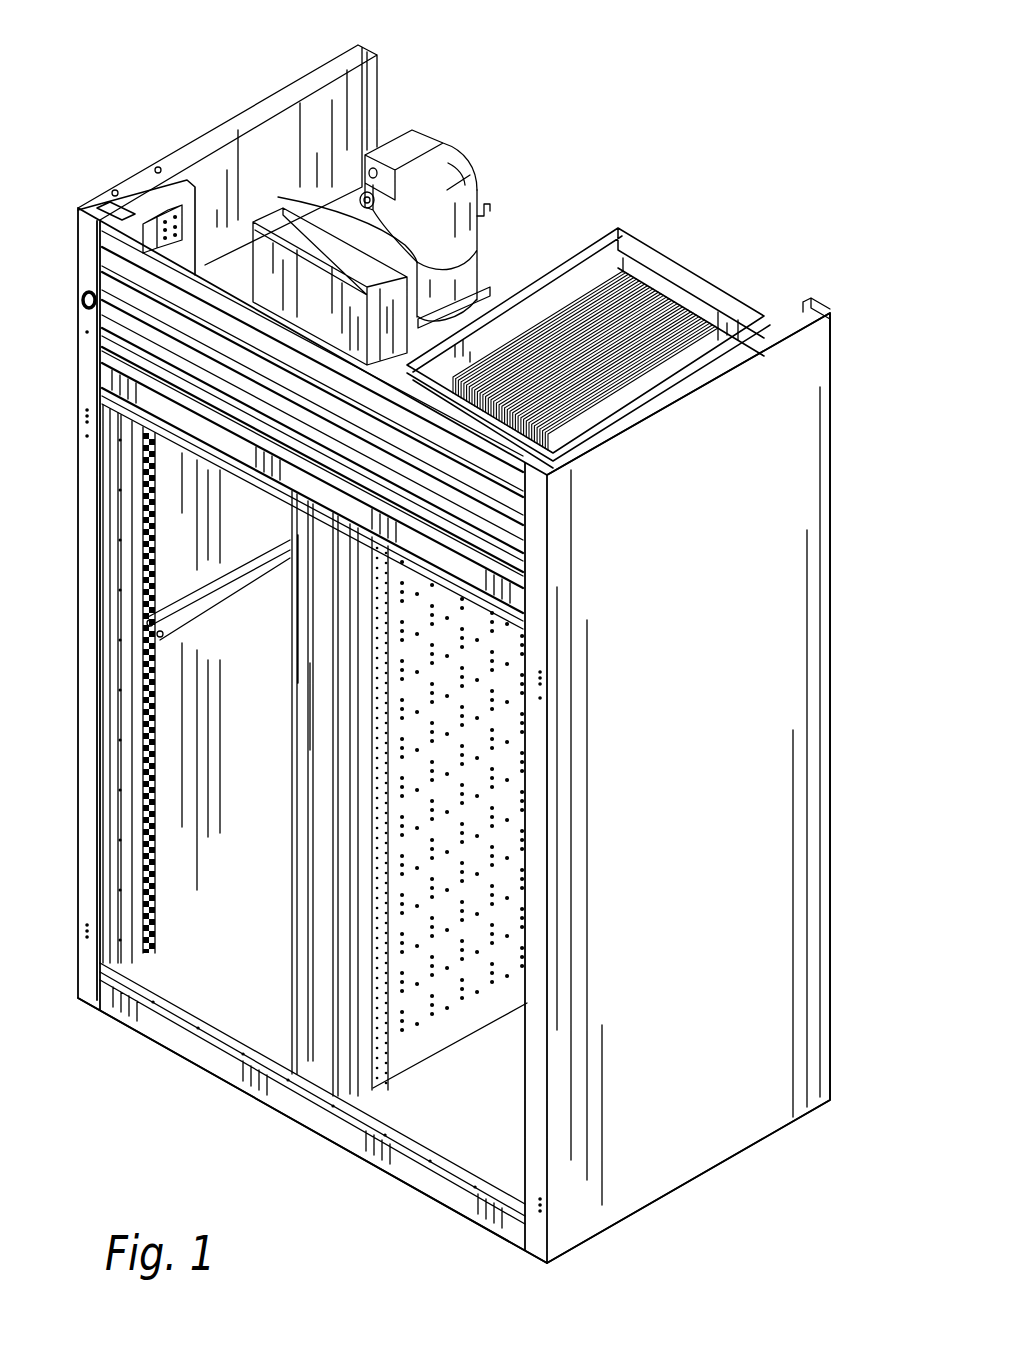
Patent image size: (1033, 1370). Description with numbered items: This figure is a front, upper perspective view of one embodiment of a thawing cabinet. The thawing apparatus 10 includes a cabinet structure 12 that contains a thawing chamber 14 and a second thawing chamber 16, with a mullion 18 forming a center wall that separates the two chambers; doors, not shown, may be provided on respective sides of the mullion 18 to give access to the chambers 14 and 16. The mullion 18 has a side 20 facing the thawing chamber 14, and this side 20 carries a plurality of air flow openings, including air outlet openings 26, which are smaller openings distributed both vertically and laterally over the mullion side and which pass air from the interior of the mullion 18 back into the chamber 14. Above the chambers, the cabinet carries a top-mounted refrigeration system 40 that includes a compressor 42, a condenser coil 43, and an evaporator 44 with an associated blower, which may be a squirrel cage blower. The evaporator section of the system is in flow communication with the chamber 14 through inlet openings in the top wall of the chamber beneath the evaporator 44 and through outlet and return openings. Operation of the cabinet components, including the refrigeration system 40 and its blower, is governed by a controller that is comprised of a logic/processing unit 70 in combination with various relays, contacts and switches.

The thawing apparatus 10 is at (699, 83).
The cabinet structure 12 is at (683, 1034).
The thawing chamber 14 is at (486, 1062).
The thawing chamber 16 is at (263, 802).
The mullion 18 is at (297, 960).
The side 20 is at (423, 1047).
The air outlet openings 26 is at (497, 826).
The refrigeration system 40 is at (564, 169).
The compressor 42 is at (459, 184).
The condenser coil 43 is at (318, 207).
The evaporator 44 is at (640, 298).
The logic/processing unit 70 is at (157, 208).